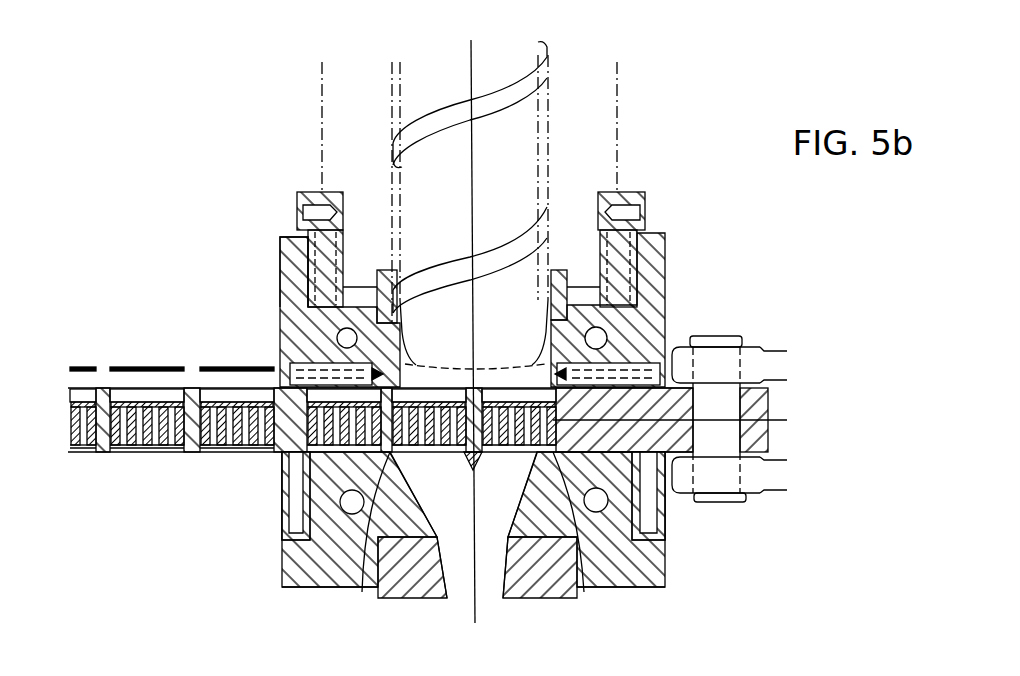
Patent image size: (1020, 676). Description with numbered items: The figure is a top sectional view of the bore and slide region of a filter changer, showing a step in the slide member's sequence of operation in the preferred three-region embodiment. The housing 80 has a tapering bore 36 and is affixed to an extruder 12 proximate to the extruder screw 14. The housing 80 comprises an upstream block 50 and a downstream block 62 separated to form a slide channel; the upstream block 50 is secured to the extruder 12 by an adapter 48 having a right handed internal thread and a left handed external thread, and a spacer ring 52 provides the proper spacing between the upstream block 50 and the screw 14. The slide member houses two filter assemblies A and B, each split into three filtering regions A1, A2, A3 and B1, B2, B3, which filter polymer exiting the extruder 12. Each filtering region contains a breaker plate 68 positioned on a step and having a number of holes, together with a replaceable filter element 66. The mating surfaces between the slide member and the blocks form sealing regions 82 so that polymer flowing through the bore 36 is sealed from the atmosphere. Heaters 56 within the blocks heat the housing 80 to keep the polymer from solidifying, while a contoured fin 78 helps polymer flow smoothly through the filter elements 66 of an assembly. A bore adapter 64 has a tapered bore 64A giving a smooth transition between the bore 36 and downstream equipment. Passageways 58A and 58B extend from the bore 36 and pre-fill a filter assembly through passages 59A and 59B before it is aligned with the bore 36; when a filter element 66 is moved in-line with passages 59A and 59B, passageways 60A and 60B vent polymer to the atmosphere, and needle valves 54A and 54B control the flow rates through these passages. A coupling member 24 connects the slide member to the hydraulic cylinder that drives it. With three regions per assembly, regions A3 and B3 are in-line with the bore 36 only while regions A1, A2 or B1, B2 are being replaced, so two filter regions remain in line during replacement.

The extruder 12 is at (620, 112).
The extruder screw 14 is at (508, 87).
The coupling member 24 is at (750, 357).
The tapering bore 36 is at (487, 287).
The adapter 48 is at (302, 193).
The upstream block 50 is at (280, 240).
The spacer ring 52 is at (385, 268).
The needle valve 54A is at (290, 376).
The needle valve 54B is at (657, 358).
The heater 56 is at (335, 330).
The passageway 58A is at (402, 306).
The passageway 58B is at (540, 358).
The passage 59A is at (362, 593).
The passage 59B is at (584, 582).
The passageway 60A is at (282, 545).
The passageway 60B is at (667, 541).
The downstream block 62 is at (297, 590).
The bore adapter 64 is at (534, 594).
The tapered bore 64A is at (460, 590).
The filter element 66 is at (176, 367).
The breaker plate 68 is at (220, 453).
The contoured fin 78 is at (482, 458).
The housing 80 is at (666, 602).
The sealing region 82 is at (279, 456).
The filter assembly A is at (177, 480).
The filtering region A1 is at (232, 395).
The filtering region A2 is at (143, 395).
The filtering region A3 is at (80, 393).
The filter assembly B is at (432, 460).
The filtering region B1 is at (330, 390).
The filtering region B2 is at (428, 395).
The filtering region B3 is at (510, 394).